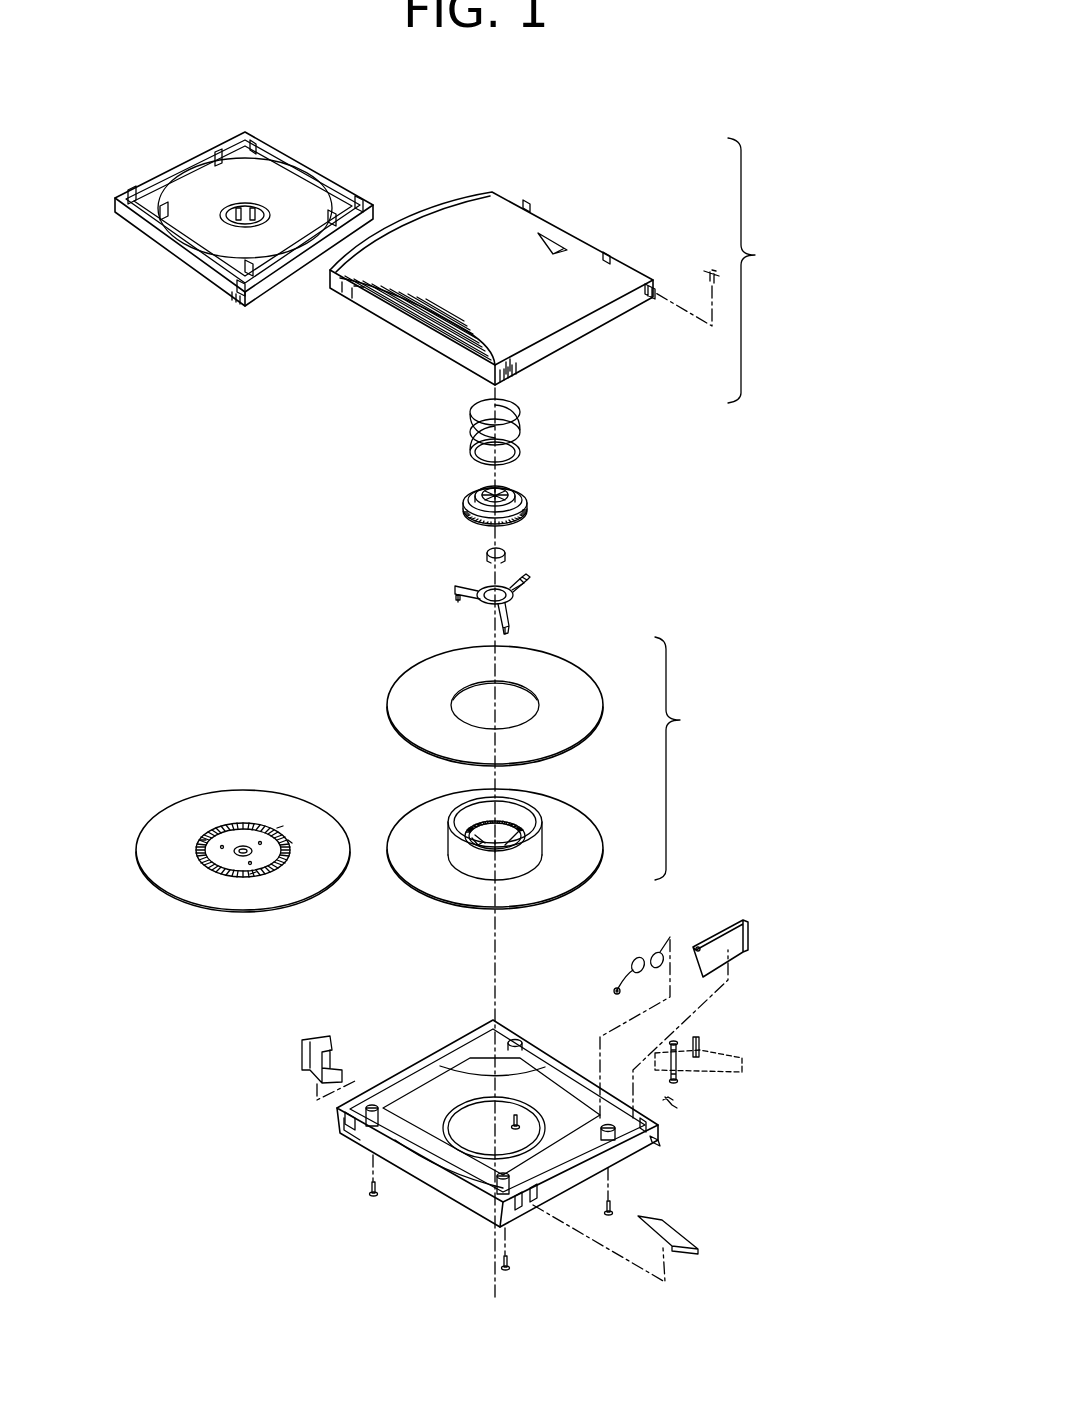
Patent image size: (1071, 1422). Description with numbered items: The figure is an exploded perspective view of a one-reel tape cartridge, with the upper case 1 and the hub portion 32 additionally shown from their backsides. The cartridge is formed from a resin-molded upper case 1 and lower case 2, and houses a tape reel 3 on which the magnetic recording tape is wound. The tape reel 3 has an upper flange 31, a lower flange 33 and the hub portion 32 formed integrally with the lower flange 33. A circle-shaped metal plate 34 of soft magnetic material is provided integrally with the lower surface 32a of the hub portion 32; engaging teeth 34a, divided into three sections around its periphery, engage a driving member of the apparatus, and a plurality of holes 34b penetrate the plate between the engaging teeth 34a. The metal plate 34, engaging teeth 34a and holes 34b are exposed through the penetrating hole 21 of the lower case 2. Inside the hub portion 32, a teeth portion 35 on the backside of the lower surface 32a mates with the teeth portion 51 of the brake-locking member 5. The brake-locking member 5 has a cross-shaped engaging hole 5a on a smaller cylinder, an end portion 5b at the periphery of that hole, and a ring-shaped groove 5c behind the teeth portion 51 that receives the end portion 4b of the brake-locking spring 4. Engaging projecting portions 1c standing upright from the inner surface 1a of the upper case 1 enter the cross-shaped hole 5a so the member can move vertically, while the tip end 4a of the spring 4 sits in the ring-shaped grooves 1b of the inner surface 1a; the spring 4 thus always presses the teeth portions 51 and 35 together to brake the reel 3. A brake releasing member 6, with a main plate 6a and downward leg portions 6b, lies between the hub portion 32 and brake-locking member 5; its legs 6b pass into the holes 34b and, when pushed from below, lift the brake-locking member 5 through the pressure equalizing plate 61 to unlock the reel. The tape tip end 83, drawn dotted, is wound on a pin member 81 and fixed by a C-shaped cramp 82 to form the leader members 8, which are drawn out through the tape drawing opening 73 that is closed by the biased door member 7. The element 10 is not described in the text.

The upper case 1 is at (451, 259).
The inner surface 1a is at (297, 197).
The ring-shaped grooves 1b is at (228, 221).
The engaging projecting portions 1c is at (273, 228).
The lower case 2 is at (423, 1192).
The penetrating hole 21 is at (465, 1132).
The tape reel 3 is at (387, 816).
The upper flange 31 is at (415, 690).
The hub portion 32 is at (450, 847).
The lower surface 32a is at (293, 837).
The lower flange 33 is at (434, 881).
The metal plate 34 is at (243, 838).
The engaging teeth 34a is at (210, 825).
The holes 34b is at (277, 828).
The teeth portion 35 is at (502, 816).
The brake-locking spring 4 is at (558, 426).
The tip end 4a is at (521, 410).
The end portion 4b is at (510, 461).
The brake-locking member 5 is at (502, 508).
The cross-shaped engaging hole 5a is at (507, 491).
The end portion 5b is at (475, 491).
The ring-shaped groove 5c is at (460, 505).
The teeth portion 51 is at (512, 523).
The brake releasing member 6 is at (500, 597).
The main plate 6a is at (518, 580).
The leg portions 6b is at (497, 628).
The pressure equalizing plate 61 is at (485, 557).
The door member 7 is at (733, 932).
The tape drawing opening 73 is at (658, 1143).
The leader members 8 is at (724, 1056).
The pin member 81 is at (677, 1040).
The C-shaped cramp 82 is at (702, 1045).
The tip end 83 is at (712, 1066).
The write protect member 10 is at (635, 958).